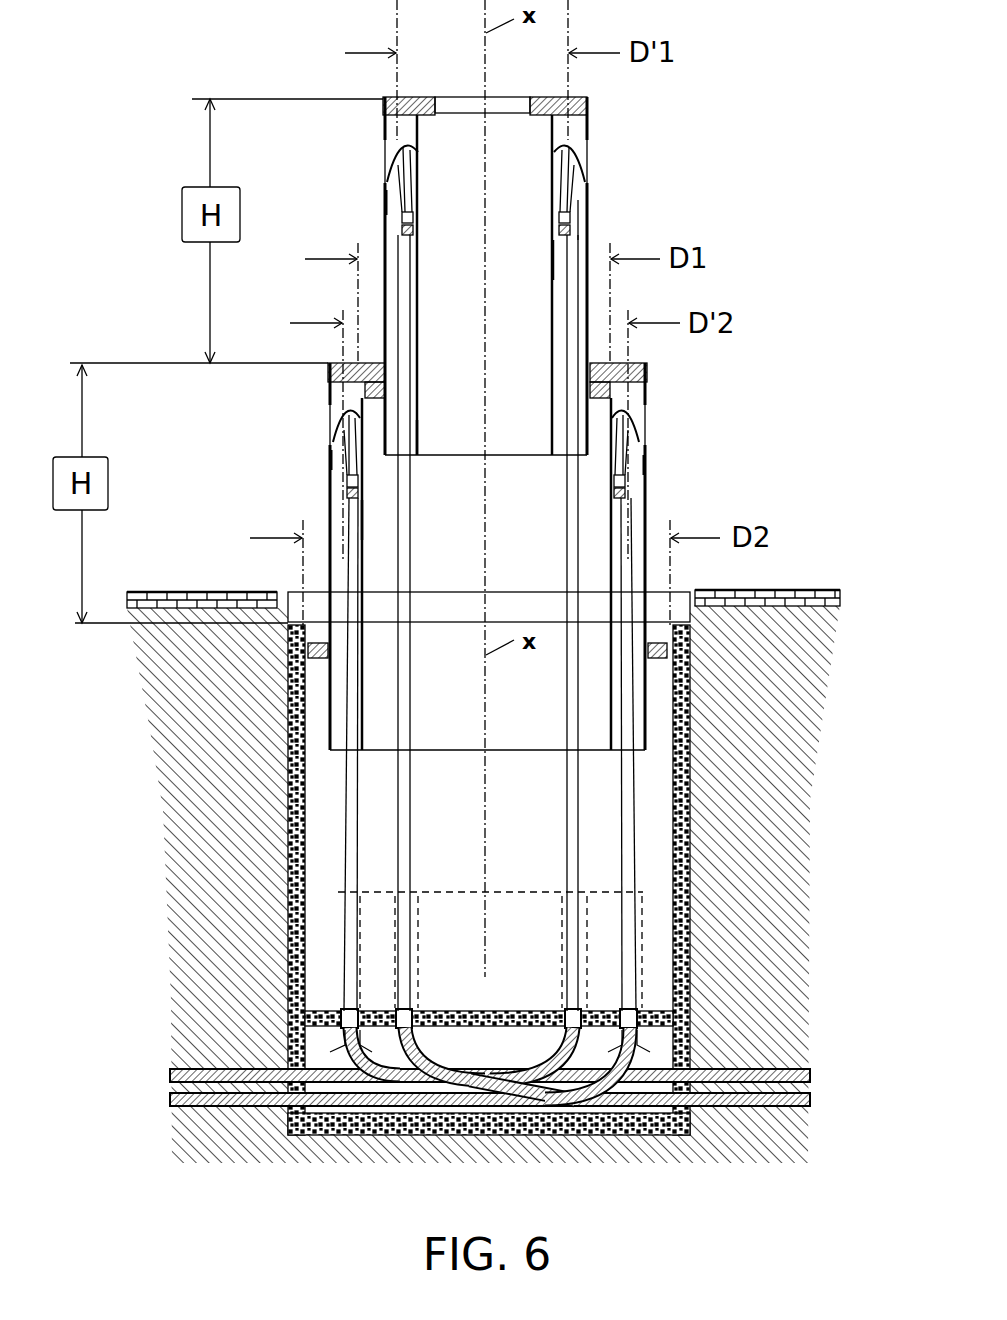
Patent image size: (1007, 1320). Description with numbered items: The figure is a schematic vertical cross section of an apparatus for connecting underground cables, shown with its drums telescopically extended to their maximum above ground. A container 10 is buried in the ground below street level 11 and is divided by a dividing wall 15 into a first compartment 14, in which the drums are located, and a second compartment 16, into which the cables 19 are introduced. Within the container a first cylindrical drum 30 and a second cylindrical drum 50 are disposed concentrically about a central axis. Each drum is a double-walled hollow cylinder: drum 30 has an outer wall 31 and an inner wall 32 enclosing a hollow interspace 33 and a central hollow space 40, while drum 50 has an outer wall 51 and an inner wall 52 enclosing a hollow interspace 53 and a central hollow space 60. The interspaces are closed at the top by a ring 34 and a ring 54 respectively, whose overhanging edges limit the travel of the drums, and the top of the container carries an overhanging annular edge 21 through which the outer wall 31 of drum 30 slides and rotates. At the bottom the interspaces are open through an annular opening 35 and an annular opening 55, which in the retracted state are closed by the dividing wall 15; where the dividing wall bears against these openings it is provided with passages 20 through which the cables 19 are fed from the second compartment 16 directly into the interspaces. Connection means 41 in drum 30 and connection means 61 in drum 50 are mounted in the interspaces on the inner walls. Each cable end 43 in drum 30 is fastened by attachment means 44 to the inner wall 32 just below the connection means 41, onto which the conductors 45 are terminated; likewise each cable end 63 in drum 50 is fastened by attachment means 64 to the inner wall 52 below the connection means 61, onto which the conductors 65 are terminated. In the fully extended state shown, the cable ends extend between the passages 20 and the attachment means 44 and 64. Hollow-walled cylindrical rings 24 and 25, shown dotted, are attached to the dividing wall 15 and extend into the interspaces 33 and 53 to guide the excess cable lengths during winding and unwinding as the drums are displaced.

The container 10 is at (692, 691).
The street level 11 is at (800, 590).
The first compartment 14 is at (660, 752).
The dividing wall 15 is at (665, 1010).
The second compartment 16 is at (600, 1108).
The cables 19 is at (357, 1108).
The passages 20 is at (340, 1043).
The overhanging annular edge 21 is at (322, 627).
The hollow-walled cylindrical ring 24 is at (642, 934).
The hollow-walled cylindrical ring 25 is at (587, 912).
The first cylindrical drum 30 is at (652, 390).
The outer wall 31 is at (327, 463).
The inner wall 32 is at (365, 517).
The hollow interspace 33 is at (640, 470).
The ring 34 is at (328, 368).
The annular opening 35 is at (360, 754).
The central hollow space 40 is at (517, 549).
The connection means 41 is at (340, 412).
The cable end 43 is at (347, 603).
The attachment means 44 is at (347, 490).
The conductors 45 is at (340, 430).
The second cylindrical drum 50 is at (593, 122).
The outer wall 51 is at (383, 209).
The inner wall 52 is at (418, 138).
The hollow interspace 53 is at (576, 198).
The ring 54 is at (385, 97).
The annular opening 55 is at (413, 447).
The central hollow space 60 is at (517, 257).
The connection means 61 is at (405, 158).
The cable end 63 is at (402, 370).
The attachment means 64 is at (418, 235).
The conductors 65 is at (417, 165).